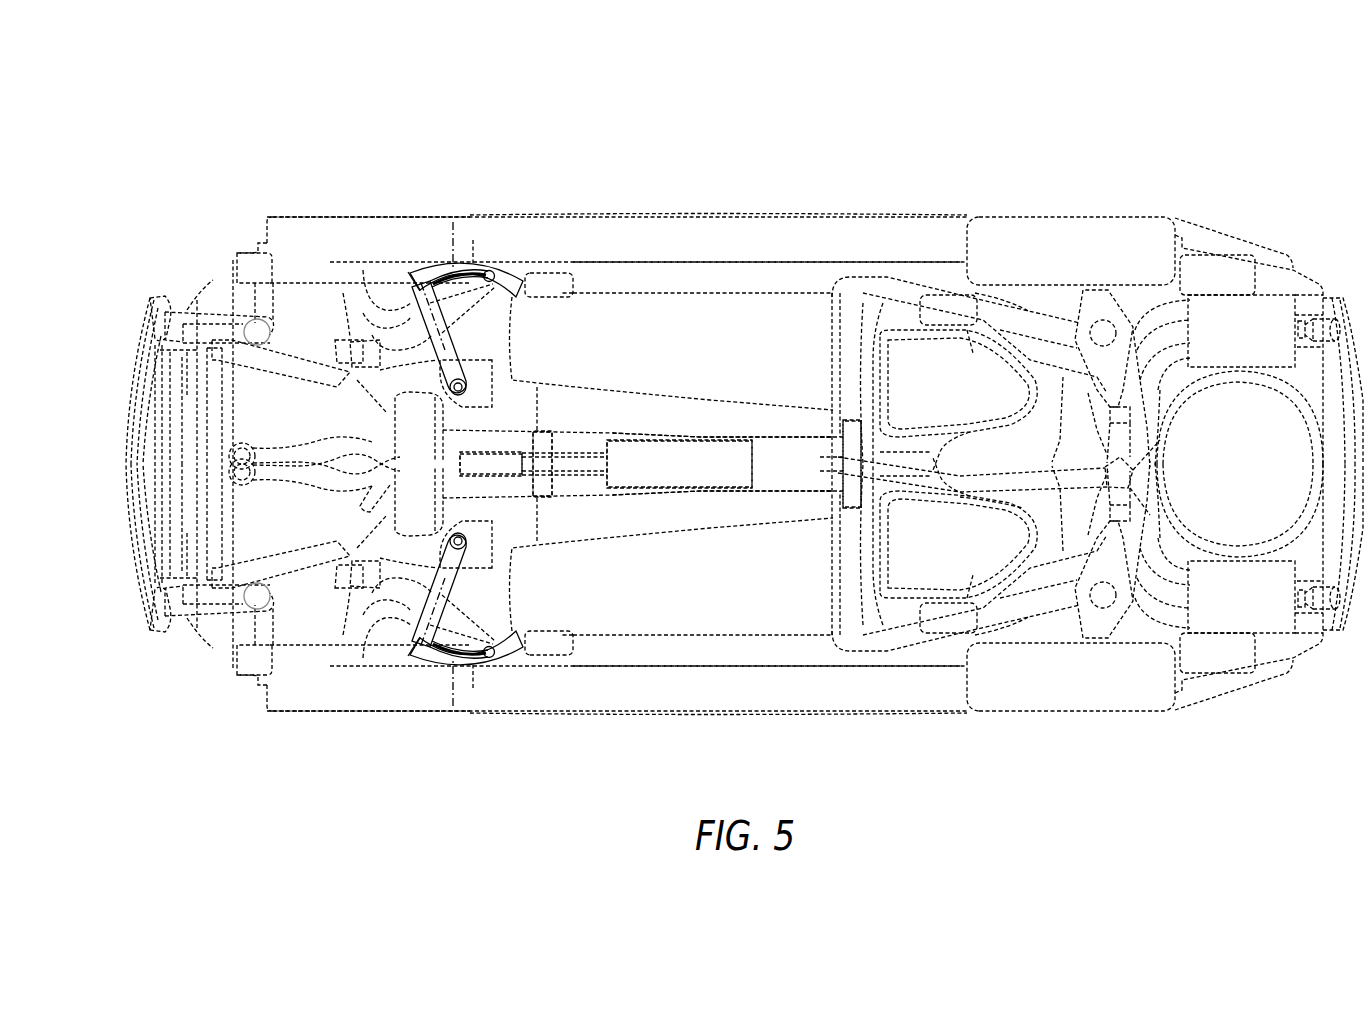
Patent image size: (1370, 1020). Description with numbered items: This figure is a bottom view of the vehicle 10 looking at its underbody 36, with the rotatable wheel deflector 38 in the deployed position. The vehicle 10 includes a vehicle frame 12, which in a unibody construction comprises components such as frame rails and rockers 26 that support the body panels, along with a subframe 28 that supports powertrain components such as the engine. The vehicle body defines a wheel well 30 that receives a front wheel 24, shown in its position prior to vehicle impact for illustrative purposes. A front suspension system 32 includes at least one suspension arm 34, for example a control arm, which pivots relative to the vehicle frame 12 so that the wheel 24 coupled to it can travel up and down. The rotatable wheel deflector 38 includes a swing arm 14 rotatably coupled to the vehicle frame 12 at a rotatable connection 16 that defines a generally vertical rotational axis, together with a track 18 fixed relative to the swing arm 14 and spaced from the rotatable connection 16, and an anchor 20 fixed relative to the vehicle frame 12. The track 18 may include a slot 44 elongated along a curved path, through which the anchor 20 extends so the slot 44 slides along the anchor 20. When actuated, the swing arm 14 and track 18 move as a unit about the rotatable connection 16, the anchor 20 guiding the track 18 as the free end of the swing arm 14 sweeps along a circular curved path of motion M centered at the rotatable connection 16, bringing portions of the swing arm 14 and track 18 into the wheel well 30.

The vehicle 10 is at (824, 136).
The vehicle frame 12 is at (655, 277).
The swing arm 14 is at (420, 303).
The rotatable connection 16 is at (480, 385).
The track 18 is at (519, 291).
The anchor 20 is at (494, 272).
The wheel 24 is at (290, 214).
The rockers 26 is at (598, 277).
The subframe 28 is at (388, 385).
The wheel well 30 is at (478, 237).
The suspension system 32 is at (323, 315).
The suspension arm 34 is at (353, 302).
The underbody 36 is at (706, 553).
The rotatable wheel deflector 38 is at (414, 257).
The slot 44 is at (446, 259).
The curved path of motion M is at (548, 296).